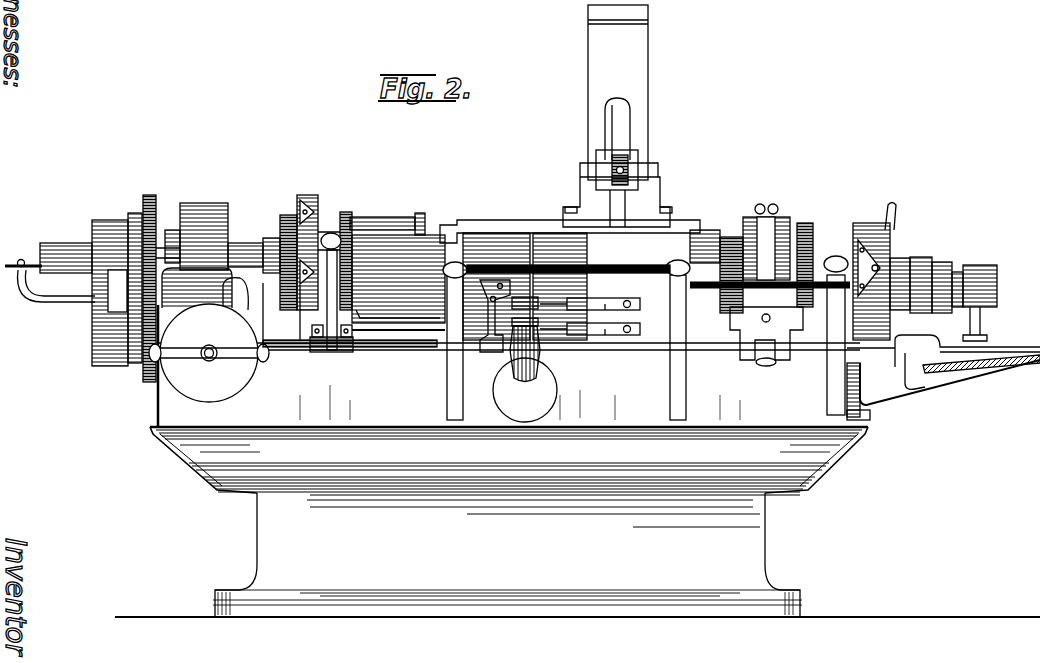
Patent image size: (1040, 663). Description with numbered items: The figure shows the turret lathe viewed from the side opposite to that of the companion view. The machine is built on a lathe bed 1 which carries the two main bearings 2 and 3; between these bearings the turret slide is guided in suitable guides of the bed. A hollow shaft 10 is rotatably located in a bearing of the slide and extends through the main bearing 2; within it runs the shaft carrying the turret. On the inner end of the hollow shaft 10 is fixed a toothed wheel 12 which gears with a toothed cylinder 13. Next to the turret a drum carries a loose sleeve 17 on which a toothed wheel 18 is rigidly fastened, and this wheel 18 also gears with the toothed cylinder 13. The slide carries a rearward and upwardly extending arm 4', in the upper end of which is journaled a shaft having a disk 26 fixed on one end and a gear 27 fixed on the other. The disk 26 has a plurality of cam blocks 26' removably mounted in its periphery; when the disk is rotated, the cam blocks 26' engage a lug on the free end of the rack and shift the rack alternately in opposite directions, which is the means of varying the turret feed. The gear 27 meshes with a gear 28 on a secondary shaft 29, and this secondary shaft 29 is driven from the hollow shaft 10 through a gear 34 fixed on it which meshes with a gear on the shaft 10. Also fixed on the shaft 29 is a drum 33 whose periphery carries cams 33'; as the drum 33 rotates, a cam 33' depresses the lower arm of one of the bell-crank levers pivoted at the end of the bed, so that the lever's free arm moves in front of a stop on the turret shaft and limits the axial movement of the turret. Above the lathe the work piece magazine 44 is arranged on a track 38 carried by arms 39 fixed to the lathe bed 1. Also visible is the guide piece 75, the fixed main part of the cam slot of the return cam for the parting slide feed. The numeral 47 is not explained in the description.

The lathe bed 1 is at (577, 461).
The main bearing 2 is at (170, 228).
The main bearing 3 is at (834, 256).
The hollow shaft 10 is at (236, 252).
The toothed wheel 12 is at (286, 214).
The toothed cylinder 13 is at (266, 356).
The loose sleeve 17 is at (398, 233).
The toothed wheel 18 is at (345, 214).
The disk 26 is at (320, 241).
The cam block 26' is at (293, 222).
The gear 27 is at (355, 219).
The gear 28 is at (353, 317).
The secondary shaft 29 is at (294, 320).
The drum 33 is at (91, 276).
The cam 33' is at (52, 302).
The gear 34 is at (152, 212).
The track 38 is at (650, 213).
The arm 39 is at (447, 383).
The arm 4' is at (330, 305).
The work piece magazine 44 is at (648, 93).
The cylinder 47 is at (478, 300).
The guide piece 75 is at (460, 337).